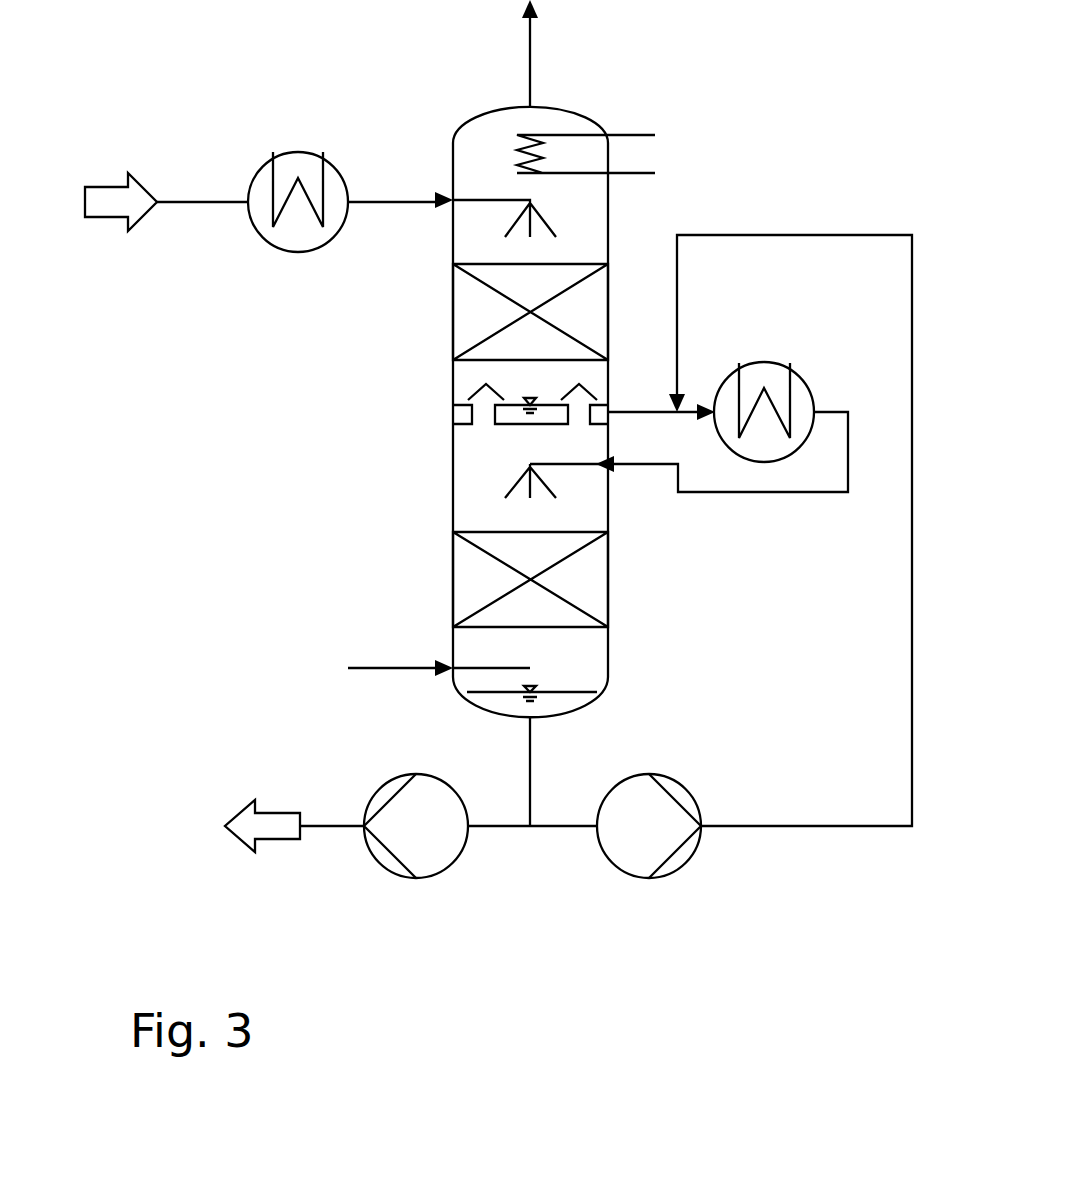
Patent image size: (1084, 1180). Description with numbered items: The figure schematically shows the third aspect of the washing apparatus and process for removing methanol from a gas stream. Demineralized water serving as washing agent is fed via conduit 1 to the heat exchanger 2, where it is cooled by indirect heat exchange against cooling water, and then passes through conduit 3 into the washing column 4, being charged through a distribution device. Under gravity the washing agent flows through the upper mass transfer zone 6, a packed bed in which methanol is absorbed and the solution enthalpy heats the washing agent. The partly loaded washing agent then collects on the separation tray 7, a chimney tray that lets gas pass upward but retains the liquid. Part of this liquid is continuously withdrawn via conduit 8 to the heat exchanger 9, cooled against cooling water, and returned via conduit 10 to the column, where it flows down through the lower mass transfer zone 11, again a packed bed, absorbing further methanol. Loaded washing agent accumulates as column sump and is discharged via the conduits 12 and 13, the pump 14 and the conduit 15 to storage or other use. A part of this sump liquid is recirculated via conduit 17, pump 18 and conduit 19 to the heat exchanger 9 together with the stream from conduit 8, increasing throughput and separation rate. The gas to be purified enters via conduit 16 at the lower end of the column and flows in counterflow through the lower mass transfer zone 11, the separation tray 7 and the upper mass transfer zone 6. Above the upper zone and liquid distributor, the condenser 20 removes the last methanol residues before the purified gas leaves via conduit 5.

The conduit 1 is at (197, 202).
The heat exchanger 2 is at (298, 152).
The conduit 3 is at (386, 202).
The washing column 4 is at (610, 247).
The conduit 5 is at (530, 42).
The upper mass transfer zone 6 is at (453, 313).
The separation tray 7 is at (522, 425).
The conduit 8 is at (645, 412).
The heat exchanger 9 is at (764, 363).
The conduit 10 is at (764, 492).
The lower mass transfer zone 11 is at (453, 585).
The conduit 12 is at (530, 748).
The conduit 13 is at (496, 826).
The pump 14 is at (416, 878).
The conduit 15 is at (320, 826).
The conduit 16 is at (418, 668).
The conduit 17 is at (566, 826).
The pump 18 is at (649, 878).
The conduit 19 is at (828, 826).
The condenser 20 is at (625, 135).